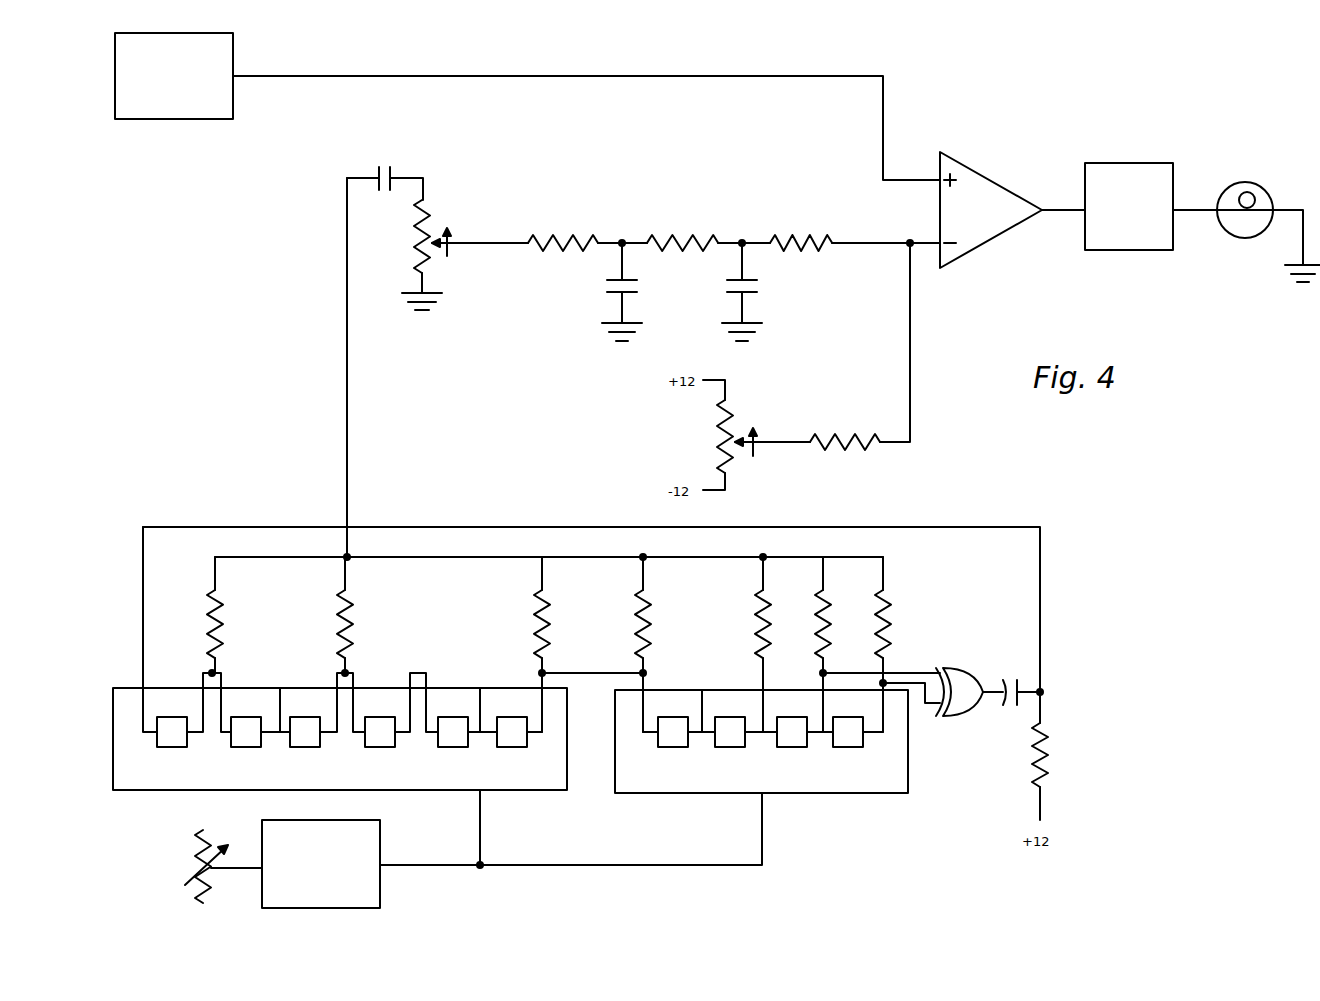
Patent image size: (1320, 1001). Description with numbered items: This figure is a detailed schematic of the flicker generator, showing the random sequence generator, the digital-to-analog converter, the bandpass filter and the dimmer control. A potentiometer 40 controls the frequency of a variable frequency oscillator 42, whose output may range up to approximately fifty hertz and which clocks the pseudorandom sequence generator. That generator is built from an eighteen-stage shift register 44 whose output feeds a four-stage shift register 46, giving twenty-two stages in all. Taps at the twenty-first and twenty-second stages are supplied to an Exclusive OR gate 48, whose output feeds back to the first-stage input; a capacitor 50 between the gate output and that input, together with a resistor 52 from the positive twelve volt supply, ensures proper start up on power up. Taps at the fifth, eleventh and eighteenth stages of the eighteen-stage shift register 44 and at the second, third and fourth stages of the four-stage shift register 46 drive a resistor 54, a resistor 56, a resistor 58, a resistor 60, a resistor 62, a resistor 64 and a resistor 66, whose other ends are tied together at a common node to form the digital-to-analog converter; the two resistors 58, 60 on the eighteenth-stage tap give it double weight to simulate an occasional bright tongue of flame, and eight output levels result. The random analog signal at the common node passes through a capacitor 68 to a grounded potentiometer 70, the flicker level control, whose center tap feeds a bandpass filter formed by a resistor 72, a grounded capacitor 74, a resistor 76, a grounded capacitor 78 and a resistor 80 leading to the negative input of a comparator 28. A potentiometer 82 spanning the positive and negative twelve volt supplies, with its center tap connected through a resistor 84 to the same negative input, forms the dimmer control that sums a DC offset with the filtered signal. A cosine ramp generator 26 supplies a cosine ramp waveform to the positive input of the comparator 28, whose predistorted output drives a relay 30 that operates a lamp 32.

The cosine ramp generator 26 is at (233, 50).
The comparator 28 is at (990, 180).
The relay 30 is at (1140, 163).
The lamp 32 is at (1240, 182).
The potentiometer 40 is at (210, 835).
The variable frequency oscillator 42 is at (380, 837).
The 18-stage shift register 44 is at (523, 790).
The 4-stage shift register 46 is at (835, 793).
The Exclusive OR gate 48 is at (958, 668).
The capacitor 50 is at (1006, 708).
The resistor 52 is at (1050, 752).
The resistor 54 is at (228, 625).
The resistor 56 is at (358, 625).
The resistor 58 is at (555, 625).
The resistor 60 is at (658, 630).
The resistor 62 is at (772, 630).
The resistor 64 is at (835, 630).
The resistor 66 is at (895, 635).
The capacitor 68 is at (382, 165).
The potentiometer 70 is at (432, 212).
The resistor 72 is at (553, 230).
The capacitor 74 is at (637, 288).
The resistor 76 is at (675, 230).
The capacitor 78 is at (758, 290).
The resistor 80 is at (790, 235).
The potentiometer 82 is at (735, 412).
The resistor 84 is at (835, 430).